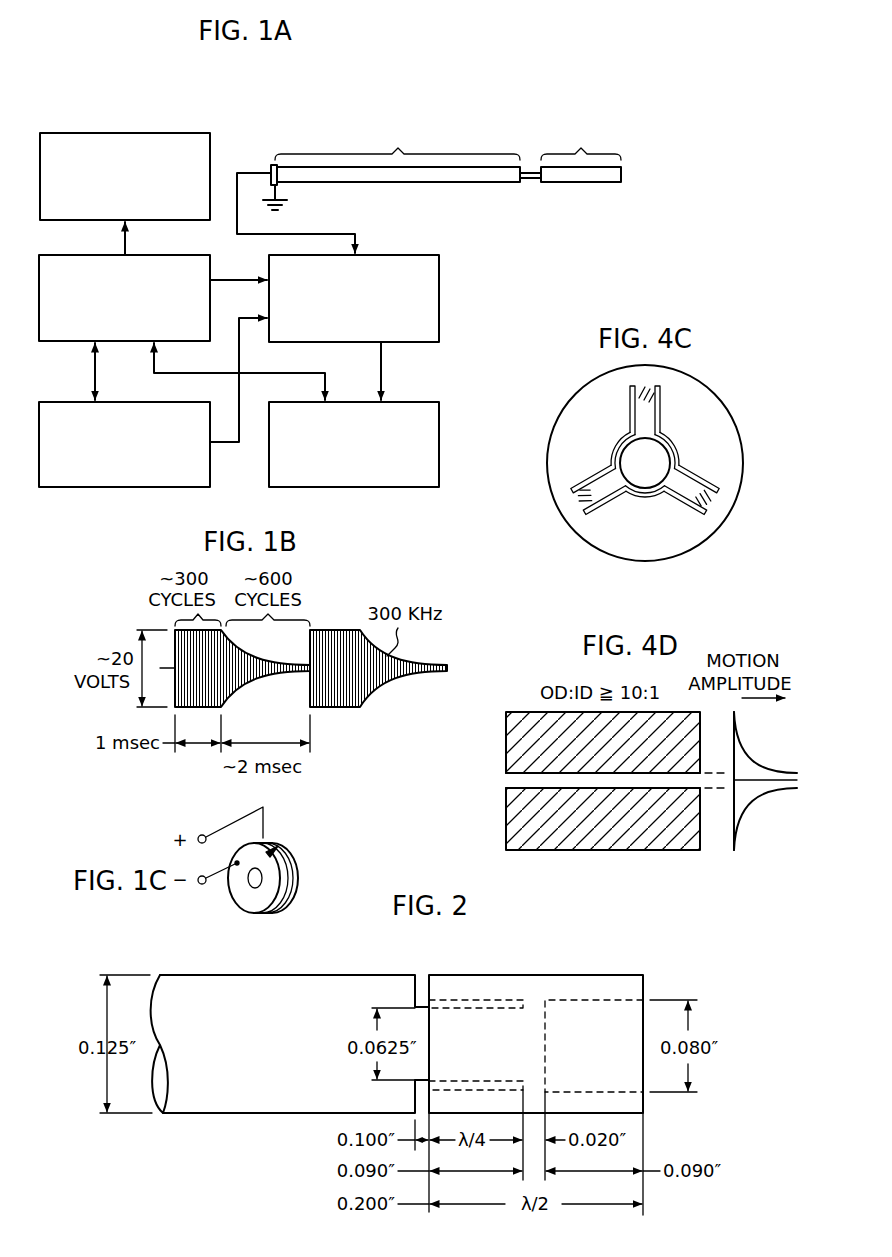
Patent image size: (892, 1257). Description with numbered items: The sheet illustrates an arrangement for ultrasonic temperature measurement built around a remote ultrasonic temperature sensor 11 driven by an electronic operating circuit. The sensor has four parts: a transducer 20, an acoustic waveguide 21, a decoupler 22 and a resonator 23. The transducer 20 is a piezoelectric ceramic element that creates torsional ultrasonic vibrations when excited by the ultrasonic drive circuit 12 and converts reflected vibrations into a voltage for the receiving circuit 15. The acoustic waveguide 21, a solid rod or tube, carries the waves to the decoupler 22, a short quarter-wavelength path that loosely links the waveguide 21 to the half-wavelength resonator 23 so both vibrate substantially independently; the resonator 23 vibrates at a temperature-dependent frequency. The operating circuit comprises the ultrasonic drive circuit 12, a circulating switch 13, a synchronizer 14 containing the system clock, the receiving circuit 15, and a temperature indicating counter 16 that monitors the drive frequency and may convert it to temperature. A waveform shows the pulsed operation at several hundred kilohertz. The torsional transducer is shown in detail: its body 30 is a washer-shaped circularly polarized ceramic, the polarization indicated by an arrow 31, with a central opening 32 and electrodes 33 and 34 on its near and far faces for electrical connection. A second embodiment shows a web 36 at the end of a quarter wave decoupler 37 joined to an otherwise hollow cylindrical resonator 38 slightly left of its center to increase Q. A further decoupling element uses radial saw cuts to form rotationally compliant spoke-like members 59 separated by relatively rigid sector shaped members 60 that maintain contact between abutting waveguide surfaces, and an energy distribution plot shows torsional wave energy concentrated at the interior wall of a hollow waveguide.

In FIG. 1A, the remote ultrasonic temperature sensor 11 is at (427, 76).
In FIG. 1A, the ultrasonic drive circuit 12 is at (58, 344).
In FIG. 1A, the circulating switch 13 is at (440, 322).
In FIG. 1A, the synchronizer 14 is at (123, 397).
In FIG. 1A, the receiving circuit 15 is at (440, 447).
In FIG. 1A, the temperature indicating counter 16 is at (122, 131).
In FIG. 1A, the transducer 20 is at (270, 166).
In FIG. 1A, the acoustic waveguide 21 is at (407, 189).
In FIG. 1A, the decoupler 22 is at (529, 187).
In FIG. 1A, the resonator 23 is at (623, 176).
In FIG. 1C, the transducer body 30 is at (290, 893).
In FIG. 1C, the arrow 31 is at (281, 858).
In FIG. 1C, the central opening 32 is at (248, 884).
In FIG. 1C, the electrode 33 is at (258, 900).
In FIG. 1C, the electrode 34 is at (296, 870).
In FIG. 2, the web 36 is at (537, 1000).
In FIG. 2, the quarter wave decoupler 37 is at (478, 1020).
In FIG. 2, the hollow cylindrical resonator 38 is at (618, 985).
In FIG. 4C, the spoke-like members 59 is at (683, 492).
In FIG. 4C, the sector shaped members 60 is at (596, 537).